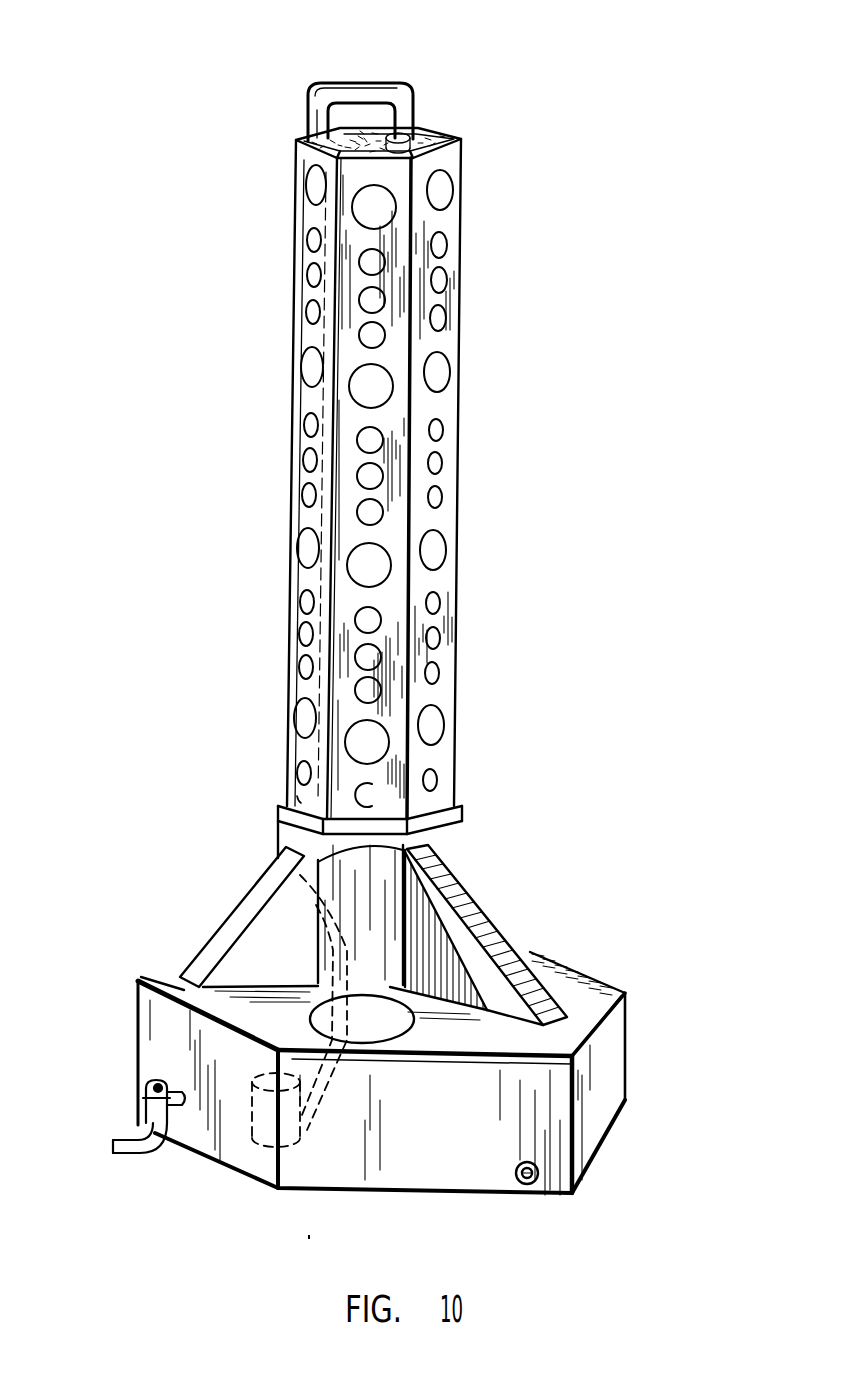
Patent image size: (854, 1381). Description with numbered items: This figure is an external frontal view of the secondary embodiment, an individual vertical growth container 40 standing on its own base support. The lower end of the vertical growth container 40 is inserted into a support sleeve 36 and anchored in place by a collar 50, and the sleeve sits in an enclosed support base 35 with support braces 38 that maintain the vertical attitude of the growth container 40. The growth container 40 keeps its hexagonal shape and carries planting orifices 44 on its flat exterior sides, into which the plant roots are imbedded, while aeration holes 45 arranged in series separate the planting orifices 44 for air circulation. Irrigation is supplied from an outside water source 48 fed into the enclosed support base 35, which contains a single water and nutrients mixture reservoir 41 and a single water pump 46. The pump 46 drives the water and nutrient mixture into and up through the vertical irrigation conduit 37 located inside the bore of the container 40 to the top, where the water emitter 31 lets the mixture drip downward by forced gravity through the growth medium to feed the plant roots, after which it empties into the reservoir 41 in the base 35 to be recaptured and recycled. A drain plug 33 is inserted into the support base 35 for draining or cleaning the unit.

The water emitter 31 is at (368, 97).
The drain plug 33 is at (538, 1177).
The enclosed support base 35 is at (607, 1047).
The support sleeve 36 is at (303, 862).
The vertical irrigation conduit 37 is at (310, 219).
The support braces 38 is at (246, 917).
The vertical growth container 40 is at (430, 223).
The water and nutrients mixture reservoir 41 is at (187, 985).
The planting orifices 44 is at (375, 569).
The aeration holes 45 is at (442, 430).
The water pump 46 is at (248, 1104).
The outside water source 48 is at (143, 1098).
The collar 50 is at (434, 473).